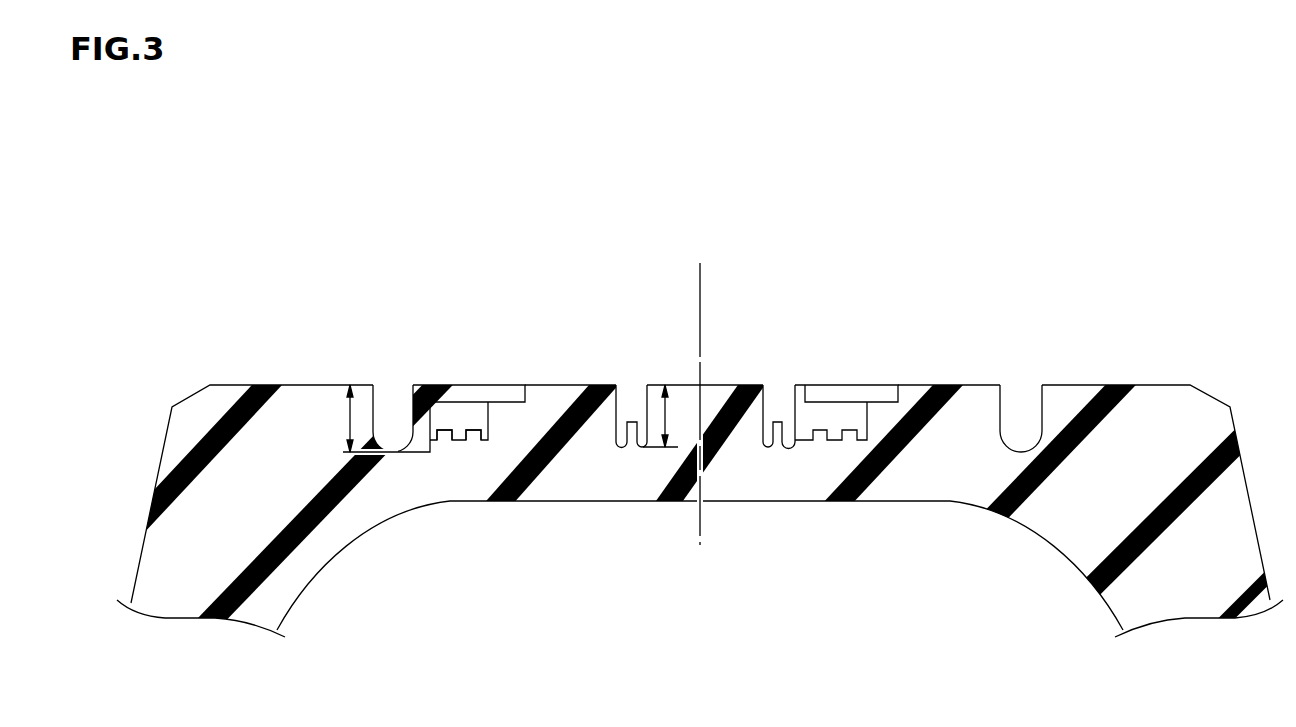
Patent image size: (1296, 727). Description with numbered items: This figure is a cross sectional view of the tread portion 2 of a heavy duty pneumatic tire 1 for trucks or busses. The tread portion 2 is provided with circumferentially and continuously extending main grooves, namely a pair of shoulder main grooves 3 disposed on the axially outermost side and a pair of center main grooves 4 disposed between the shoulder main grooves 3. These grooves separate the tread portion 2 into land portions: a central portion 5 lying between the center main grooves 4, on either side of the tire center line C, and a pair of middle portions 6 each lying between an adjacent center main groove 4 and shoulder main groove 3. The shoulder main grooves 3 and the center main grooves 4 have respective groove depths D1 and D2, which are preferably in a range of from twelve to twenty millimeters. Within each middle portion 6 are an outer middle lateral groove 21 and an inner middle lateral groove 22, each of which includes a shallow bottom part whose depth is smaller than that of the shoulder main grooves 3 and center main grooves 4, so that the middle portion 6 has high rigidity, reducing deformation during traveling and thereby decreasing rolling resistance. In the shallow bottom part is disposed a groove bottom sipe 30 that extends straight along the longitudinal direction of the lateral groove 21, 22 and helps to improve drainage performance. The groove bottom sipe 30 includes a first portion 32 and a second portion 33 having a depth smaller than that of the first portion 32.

The heavy duty pneumatic tire 1 is at (659, 451).
The tread portion 2 is at (1060, 386).
The shoulder main groove 3 is at (395, 390).
The center main groove 4 is at (632, 390).
The central portion 5 is at (709, 382).
The middle portion 6 is at (548, 383).
The outer middle lateral groove 21 is at (446, 389).
The inner middle lateral groove 22 is at (861, 389).
The groove bottom sipe 30 is at (467, 266).
The first portion 32 is at (458, 434).
The second portion 33 is at (479, 426).
The tire equator center line C is at (700, 390).
The groove depth of shoulder main groove D1 is at (347, 421).
The groove depth of center main groove D2 is at (665, 410).